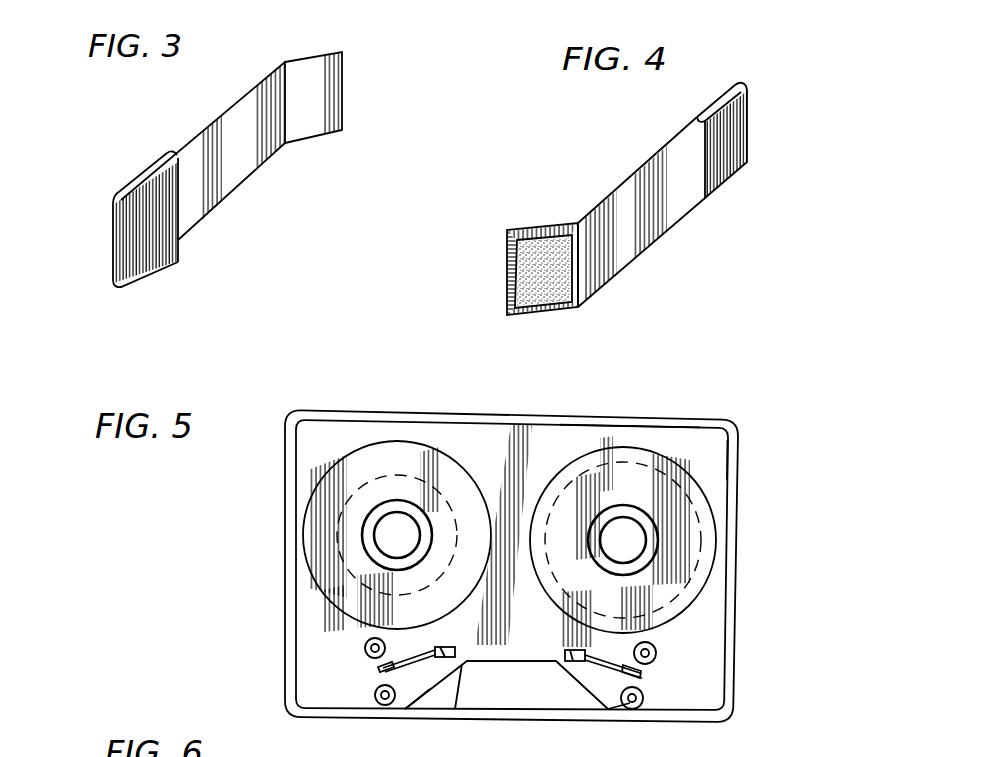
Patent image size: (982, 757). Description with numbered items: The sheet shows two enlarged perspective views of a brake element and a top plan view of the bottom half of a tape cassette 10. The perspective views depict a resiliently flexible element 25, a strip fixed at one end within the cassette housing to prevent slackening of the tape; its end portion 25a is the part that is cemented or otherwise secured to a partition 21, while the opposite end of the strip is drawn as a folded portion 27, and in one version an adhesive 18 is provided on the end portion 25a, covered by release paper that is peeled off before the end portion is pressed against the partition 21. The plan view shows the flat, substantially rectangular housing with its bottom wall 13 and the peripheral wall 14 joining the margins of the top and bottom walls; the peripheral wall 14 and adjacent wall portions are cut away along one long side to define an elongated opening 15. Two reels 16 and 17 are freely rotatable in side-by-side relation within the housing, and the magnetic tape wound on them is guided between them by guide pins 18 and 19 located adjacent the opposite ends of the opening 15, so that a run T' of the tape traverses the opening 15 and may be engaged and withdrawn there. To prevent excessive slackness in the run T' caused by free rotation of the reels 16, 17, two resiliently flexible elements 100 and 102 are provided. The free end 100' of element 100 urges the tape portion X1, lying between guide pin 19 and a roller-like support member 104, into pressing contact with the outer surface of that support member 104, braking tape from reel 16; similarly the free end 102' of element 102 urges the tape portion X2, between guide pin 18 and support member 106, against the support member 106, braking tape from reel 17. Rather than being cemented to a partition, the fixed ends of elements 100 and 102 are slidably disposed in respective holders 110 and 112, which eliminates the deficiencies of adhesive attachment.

In FIG. 5, the tape cassette 10 is at (757, 474).
In FIG. 5, the bottom wall 13 is at (627, 433).
In FIG. 5, the peripheral wall 14 is at (728, 627).
In FIG. 5, the opening 15 is at (508, 722).
In FIG. 5, the reel 16 is at (637, 510).
In FIG. 5, the reel 17 is at (380, 502).
In FIG. 4, the guide pin 18 is at (553, 303).
In FIG. 5, the guide pin 18 is at (393, 703).
In FIG. 5, the guide pin 19 is at (628, 704).
In FIG. 5, the partition 21 is at (497, 645).
In FIG. 3, the resiliently flexible element 25 is at (223, 187).
In FIG. 4, the resiliently flexible element 25 is at (670, 210).
In FIG. 3, the end portion 25a is at (303, 128).
In FIG. 4, the end portion 25a is at (532, 230).
In FIG. 3, the folded clip portion 27 is at (112, 238).
In FIG. 4, the folded clip portion 27 is at (745, 138).
In FIG. 5, the resiliently flexible element 100 is at (586, 680).
In FIG. 5, the free end 100' is at (668, 670).
In FIG. 5, the resiliently flexible element 102 is at (436, 678).
In FIG. 5, the free end 102' is at (345, 709).
In FIG. 5, the support member 104 is at (653, 648).
In FIG. 5, the support member 106 is at (368, 658).
In FIG. 5, the holder 110 is at (567, 652).
In FIG. 5, the holder 112 is at (447, 645).
In FIG. 5, the tape portion X1 is at (644, 698).
In FIG. 5, the tape portion X2 is at (383, 705).
In FIG. 5, the tape run T' is at (456, 710).